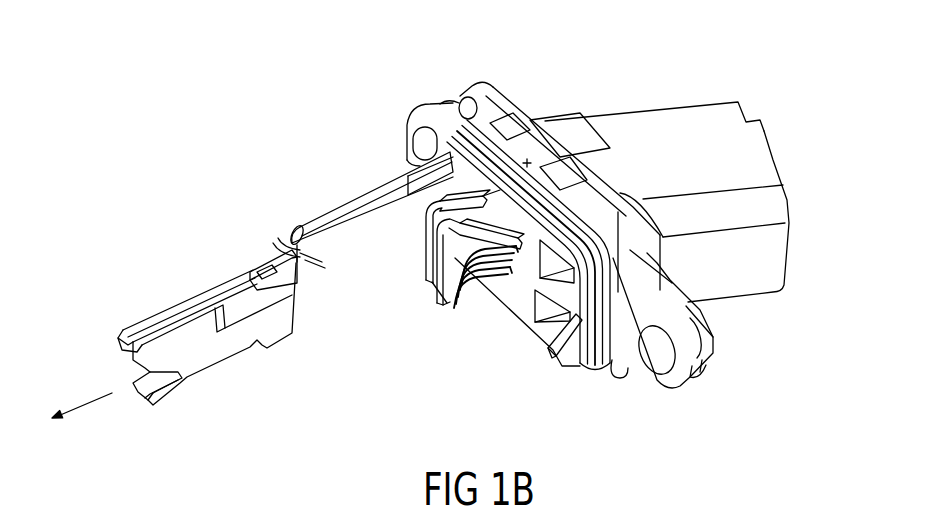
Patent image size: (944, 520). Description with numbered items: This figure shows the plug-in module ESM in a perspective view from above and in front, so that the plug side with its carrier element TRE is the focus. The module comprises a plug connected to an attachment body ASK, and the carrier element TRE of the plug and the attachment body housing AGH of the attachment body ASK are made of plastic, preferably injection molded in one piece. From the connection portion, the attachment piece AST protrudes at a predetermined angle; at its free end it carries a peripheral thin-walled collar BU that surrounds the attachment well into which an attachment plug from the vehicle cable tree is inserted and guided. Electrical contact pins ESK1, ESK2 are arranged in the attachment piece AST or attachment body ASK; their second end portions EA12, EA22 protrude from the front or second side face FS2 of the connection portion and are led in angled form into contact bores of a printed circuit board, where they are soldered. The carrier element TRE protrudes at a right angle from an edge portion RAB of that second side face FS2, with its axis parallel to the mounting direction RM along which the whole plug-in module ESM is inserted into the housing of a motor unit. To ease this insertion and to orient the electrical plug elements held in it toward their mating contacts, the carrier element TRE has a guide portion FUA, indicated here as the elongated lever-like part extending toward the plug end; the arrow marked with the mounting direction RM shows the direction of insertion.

The plug-in module ESM is at (317, 106).
The edge portion RAB is at (446, 99).
The attachment body ASK is at (526, 86).
The attachment piece AST is at (712, 115).
The collar BU is at (760, 177).
The electrical contact pin ESK1 is at (440, 212).
The guide portion FUA is at (349, 207).
The carrier element TRE is at (280, 238).
The second end portion EA12 is at (423, 237).
The second end portion EA22 is at (440, 300).
The electrical contact pin ESK2 is at (498, 282).
The second side face FS2 is at (524, 322).
The attachment body housing AGH is at (745, 295).
The mounting direction RM is at (82, 423).